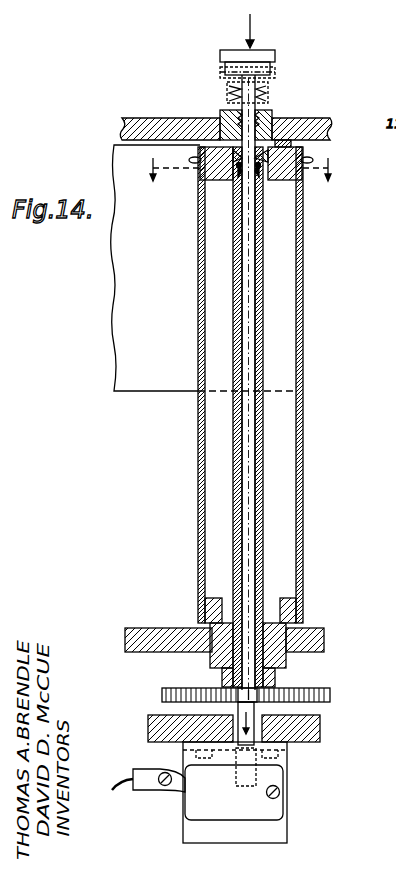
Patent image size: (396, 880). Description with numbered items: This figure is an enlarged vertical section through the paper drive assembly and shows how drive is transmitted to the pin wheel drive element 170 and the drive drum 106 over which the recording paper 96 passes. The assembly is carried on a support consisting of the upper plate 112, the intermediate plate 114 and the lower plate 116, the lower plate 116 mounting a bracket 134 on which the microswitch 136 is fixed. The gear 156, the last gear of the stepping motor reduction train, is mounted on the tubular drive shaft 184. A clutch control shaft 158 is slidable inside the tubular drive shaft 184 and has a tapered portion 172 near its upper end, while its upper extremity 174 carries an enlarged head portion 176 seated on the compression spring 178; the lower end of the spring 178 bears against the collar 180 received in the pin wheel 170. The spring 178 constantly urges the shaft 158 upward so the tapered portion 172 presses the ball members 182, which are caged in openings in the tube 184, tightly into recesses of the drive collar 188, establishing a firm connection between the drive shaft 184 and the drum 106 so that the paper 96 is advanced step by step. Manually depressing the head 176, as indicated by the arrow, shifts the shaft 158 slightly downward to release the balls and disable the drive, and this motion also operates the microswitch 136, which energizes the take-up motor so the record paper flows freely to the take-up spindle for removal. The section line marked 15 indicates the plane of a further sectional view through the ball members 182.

The enlarged head portion 176 is at (262, 55).
The compression spring 178 is at (262, 99).
The upper extremity 174 is at (228, 113).
The upper plate 112 is at (154, 117).
The pin wheel drive element 170 is at (314, 118).
The collar 180 is at (284, 123).
The ball members 182 is at (303, 152).
The section line 15 is at (241, 178).
The tapered portion 172 is at (243, 180).
The drive collar 188 is at (263, 187).
The tubular drive shaft 184 is at (263, 260).
The recording paper 96 is at (303, 383).
The drive drum 106 is at (303, 463).
The clutch control shaft 158 is at (247, 534).
The intermediate plate 114 is at (312, 628).
The gear 156 is at (322, 690).
The lower plate 116 is at (322, 731).
The bracket 134 is at (272, 838).
The microswitch 136 is at (272, 812).